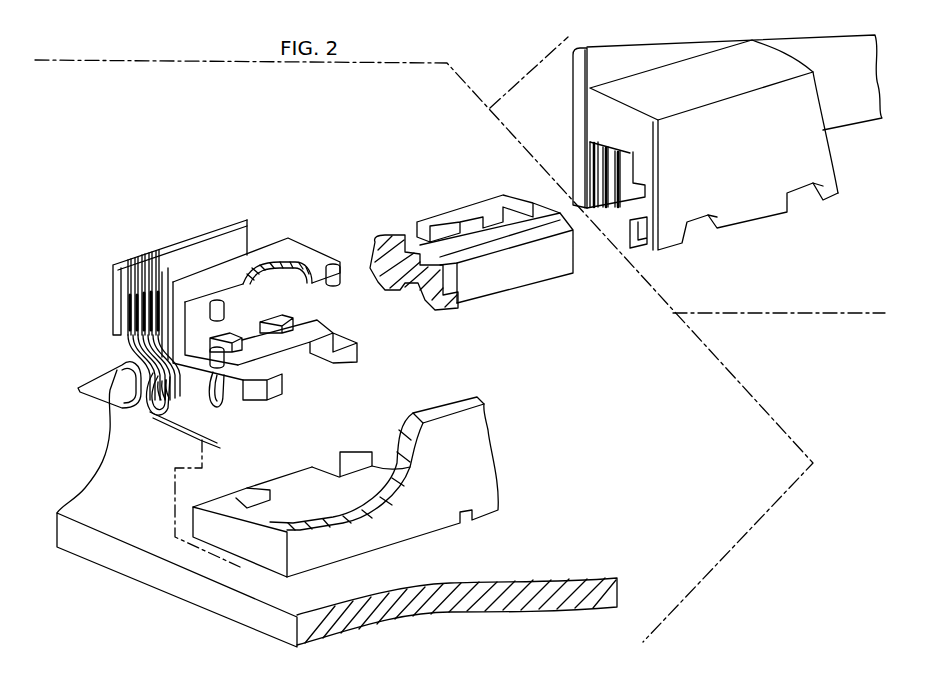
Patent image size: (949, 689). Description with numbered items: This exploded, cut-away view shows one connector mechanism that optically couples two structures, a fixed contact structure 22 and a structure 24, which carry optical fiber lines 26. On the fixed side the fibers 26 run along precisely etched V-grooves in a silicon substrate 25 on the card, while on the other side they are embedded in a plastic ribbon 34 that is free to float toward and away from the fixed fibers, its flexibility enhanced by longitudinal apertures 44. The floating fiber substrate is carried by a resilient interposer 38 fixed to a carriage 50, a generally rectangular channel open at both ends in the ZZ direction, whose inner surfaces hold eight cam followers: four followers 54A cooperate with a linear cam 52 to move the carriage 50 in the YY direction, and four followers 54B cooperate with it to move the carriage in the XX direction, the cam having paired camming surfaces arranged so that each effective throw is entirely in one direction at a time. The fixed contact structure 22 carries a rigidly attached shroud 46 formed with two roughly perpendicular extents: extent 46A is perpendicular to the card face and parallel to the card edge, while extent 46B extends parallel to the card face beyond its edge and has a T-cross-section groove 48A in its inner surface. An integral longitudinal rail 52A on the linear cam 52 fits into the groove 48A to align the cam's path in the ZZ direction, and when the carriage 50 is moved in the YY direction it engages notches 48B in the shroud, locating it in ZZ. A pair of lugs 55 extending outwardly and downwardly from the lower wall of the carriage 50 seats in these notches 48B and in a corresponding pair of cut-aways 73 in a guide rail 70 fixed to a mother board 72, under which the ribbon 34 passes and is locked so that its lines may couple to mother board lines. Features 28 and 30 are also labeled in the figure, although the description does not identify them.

The fixed contact structure 22 is at (550, 116).
The structure 24 is at (290, 151).
The substrate 25 is at (811, 48).
The optical fiber lines 26 is at (128, 351).
The terminal support board 28 is at (585, 147).
The insulating plate 30 is at (125, 286).
The plastic ribbon 34 is at (113, 395).
The resilient interposer 38 is at (247, 228).
The longitudinal apertures 44 is at (208, 417).
The shroud 46 is at (753, 145).
The extent 46A is at (722, 86).
The extent 46B is at (750, 160).
The T-cross section groove 48A is at (646, 240).
The notches 48B is at (812, 198).
The carriage 50 is at (226, 295).
The linear cam 52 is at (378, 262).
The longitudinal rail 52A is at (457, 297).
The cam followers 54A is at (231, 336).
The cam followers 54B is at (336, 265).
The lugs 55 is at (358, 352).
The guide rail 70 is at (315, 501).
The mother board 72 is at (500, 561).
The cut-aways 73 is at (236, 498).